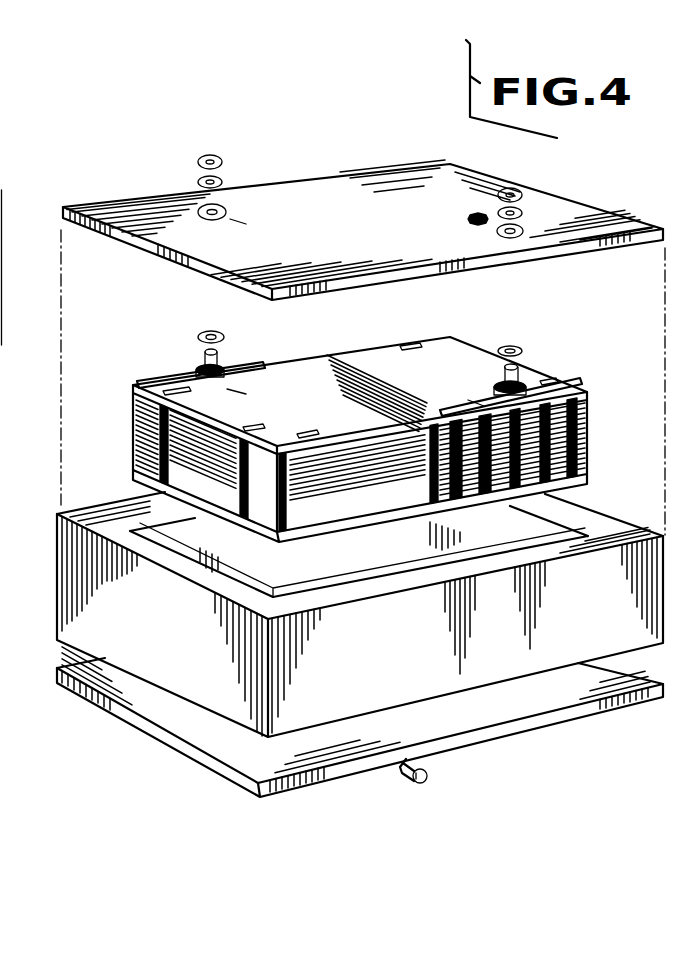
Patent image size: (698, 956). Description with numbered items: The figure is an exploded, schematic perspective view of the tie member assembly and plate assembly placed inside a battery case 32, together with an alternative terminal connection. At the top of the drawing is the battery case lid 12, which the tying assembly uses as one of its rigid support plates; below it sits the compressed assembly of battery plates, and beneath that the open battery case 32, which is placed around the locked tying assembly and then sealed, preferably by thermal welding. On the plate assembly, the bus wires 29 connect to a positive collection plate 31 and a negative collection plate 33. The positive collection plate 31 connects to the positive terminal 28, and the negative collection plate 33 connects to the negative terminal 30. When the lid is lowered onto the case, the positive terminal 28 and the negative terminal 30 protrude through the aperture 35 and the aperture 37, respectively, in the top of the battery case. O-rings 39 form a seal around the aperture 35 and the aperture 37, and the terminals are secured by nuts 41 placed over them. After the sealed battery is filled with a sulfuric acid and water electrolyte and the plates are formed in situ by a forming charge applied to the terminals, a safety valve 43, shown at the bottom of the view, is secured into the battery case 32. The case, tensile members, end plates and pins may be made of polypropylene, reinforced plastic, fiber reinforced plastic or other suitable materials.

The battery case lid 12 is at (357, 180).
The positive terminal 28 is at (525, 372).
The bus wires 29 is at (122, 418).
The negative terminal 30 is at (205, 355).
The positive collection plate 31 is at (565, 381).
The battery case 32 is at (663, 645).
The negative collection plate 33 is at (160, 371).
The aperture 35 is at (525, 230).
The aperture 37 is at (198, 203).
The O-rings 39 is at (204, 332).
The nuts 41 is at (222, 155).
The safety valve 43 is at (428, 773).